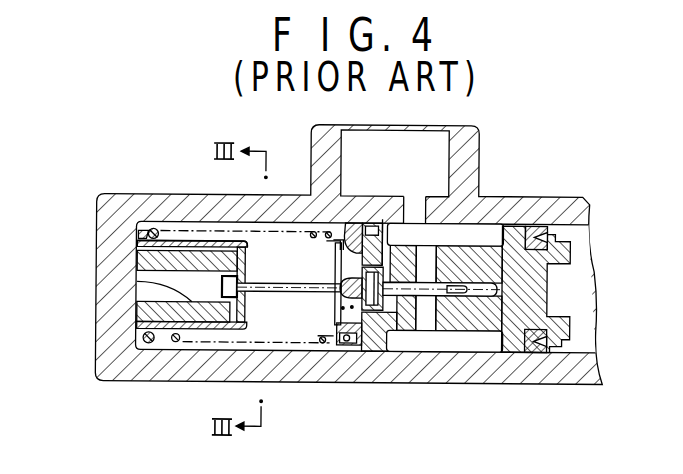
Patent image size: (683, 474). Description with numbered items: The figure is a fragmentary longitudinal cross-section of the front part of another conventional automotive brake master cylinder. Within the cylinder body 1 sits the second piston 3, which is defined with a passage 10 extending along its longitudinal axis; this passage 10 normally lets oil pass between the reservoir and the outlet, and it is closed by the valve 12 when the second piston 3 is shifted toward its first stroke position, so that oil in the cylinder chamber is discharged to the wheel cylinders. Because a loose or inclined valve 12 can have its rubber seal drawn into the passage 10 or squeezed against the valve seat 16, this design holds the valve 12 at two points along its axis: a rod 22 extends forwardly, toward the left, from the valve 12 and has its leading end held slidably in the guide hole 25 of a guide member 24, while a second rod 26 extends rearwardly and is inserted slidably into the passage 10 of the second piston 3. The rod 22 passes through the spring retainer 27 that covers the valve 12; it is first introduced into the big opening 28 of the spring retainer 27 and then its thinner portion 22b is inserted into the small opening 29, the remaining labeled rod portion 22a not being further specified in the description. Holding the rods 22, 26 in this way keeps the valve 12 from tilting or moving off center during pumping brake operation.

The cylinder body 1 is at (512, 373).
The second piston 3 is at (483, 327).
The passage 10 is at (446, 340).
The valve 12 is at (362, 352).
The valve seat 16 is at (400, 244).
The rod 22 is at (306, 268).
The piston lower groove 22a is at (208, 337).
The thinner portion 22b is at (243, 250).
The guide member 24 is at (157, 314).
The guide hole 25 is at (137, 287).
The rod 26 is at (424, 332).
The spring retainer 27 is at (258, 325).
The big opening 28 is at (246, 310).
The small opening 29 is at (245, 287).